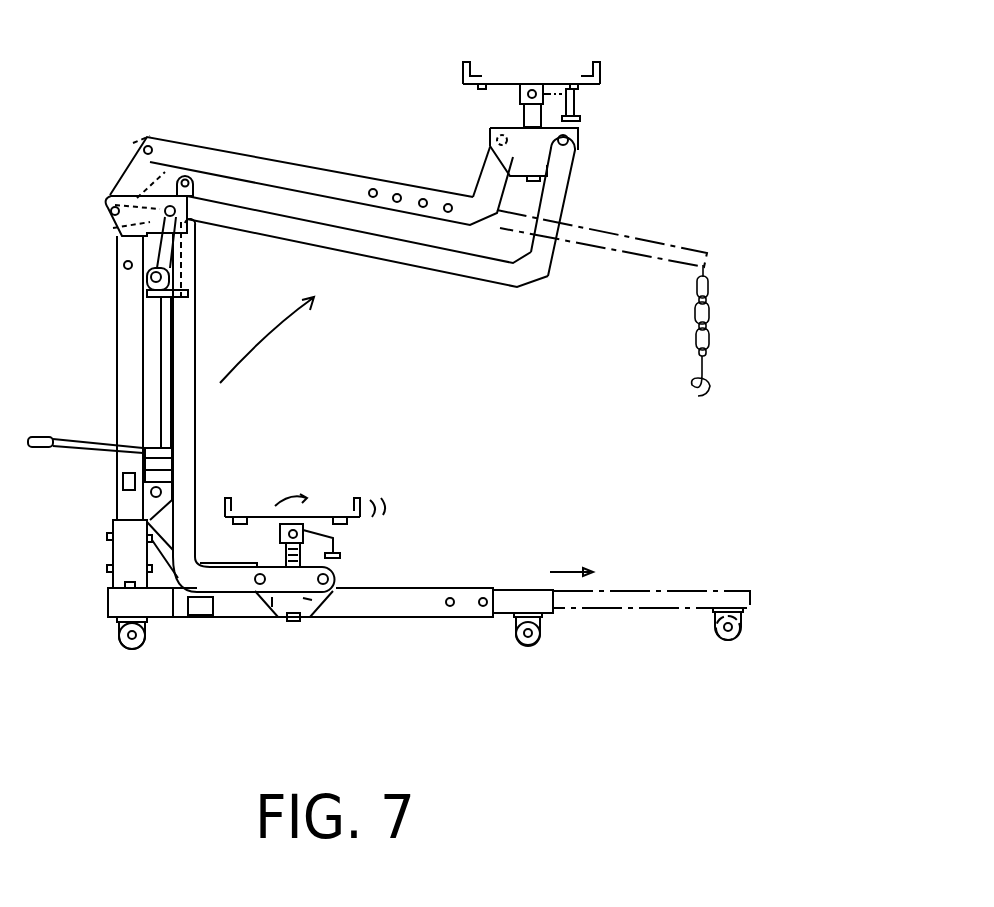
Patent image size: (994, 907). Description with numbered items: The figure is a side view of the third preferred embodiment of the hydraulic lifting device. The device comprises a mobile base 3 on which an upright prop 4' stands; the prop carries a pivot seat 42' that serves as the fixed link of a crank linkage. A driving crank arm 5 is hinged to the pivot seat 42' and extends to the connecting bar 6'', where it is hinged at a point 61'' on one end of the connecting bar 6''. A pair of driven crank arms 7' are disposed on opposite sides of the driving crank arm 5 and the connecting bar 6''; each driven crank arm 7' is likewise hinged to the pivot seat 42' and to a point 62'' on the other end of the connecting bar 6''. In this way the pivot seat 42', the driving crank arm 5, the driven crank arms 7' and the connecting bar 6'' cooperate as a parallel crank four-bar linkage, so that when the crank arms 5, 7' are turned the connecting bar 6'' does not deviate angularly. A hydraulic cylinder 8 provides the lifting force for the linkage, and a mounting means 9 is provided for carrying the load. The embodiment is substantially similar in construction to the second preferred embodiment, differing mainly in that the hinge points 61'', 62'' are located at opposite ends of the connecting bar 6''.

The mobile base 3 is at (443, 570).
The upright prop 4' is at (103, 412).
The pivot seat 42' is at (113, 231).
The driving crank arm 5 is at (245, 153).
The connecting bar 6'' is at (482, 404).
The hinge point 61'' is at (461, 130).
The hinge point 62'' is at (608, 127).
The driven crank arms 7' is at (347, 322).
The hydraulic cylinder 8 is at (173, 380).
The mounting means 9 is at (345, 486).